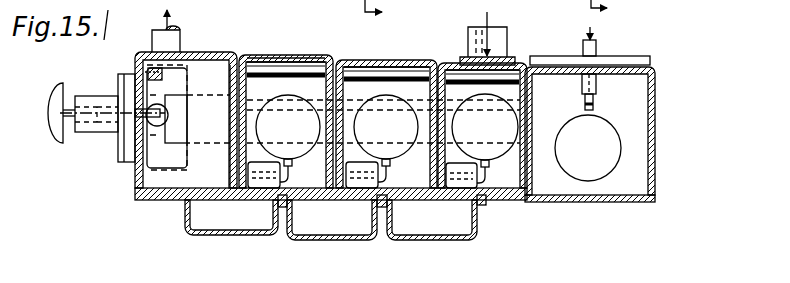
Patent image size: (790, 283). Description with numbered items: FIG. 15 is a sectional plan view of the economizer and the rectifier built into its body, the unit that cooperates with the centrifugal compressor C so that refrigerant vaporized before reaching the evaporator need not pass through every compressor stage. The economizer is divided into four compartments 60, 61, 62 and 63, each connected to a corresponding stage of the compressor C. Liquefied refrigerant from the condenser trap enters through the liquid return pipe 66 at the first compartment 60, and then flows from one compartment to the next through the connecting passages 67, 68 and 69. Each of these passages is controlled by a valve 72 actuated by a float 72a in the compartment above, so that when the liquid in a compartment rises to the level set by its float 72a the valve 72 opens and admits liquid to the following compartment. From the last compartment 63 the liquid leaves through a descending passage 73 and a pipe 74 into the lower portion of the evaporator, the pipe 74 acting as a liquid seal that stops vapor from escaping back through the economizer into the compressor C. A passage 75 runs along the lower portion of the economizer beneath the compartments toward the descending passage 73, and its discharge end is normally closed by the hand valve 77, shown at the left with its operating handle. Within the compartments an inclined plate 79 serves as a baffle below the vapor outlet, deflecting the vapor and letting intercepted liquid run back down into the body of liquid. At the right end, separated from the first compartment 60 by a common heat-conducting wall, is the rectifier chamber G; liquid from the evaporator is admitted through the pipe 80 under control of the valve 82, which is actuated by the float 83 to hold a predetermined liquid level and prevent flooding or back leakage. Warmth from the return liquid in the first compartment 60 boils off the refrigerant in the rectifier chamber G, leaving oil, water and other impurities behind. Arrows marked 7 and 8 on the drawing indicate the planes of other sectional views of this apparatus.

The section line 7 is at (377, 19).
The section line 8 is at (608, 9).
The first compartment 60 is at (482, 125).
The second compartment 61 is at (386, 124).
The third compartment 62 is at (327, 146).
The last compartment 63 is at (234, 144).
The liquid return pipe 66 is at (507, 53).
The connecting passage 67 is at (402, 182).
The connecting passage 68 is at (308, 180).
The connecting passage 69 is at (204, 170).
The valve 72 is at (268, 190).
The float 72a is at (383, 127).
The descending passage 73 is at (147, 78).
The pipe 74 is at (178, 38).
The passage 75 is at (241, 55).
The hand valve 77 is at (160, 118).
The inclined plate 79 is at (362, 68).
The pipe 80 is at (597, 50).
The valve 82 is at (582, 94).
The float 83 is at (588, 148).
The rectifier chamber G is at (590, 125).
The compressor C is at (183, 269).